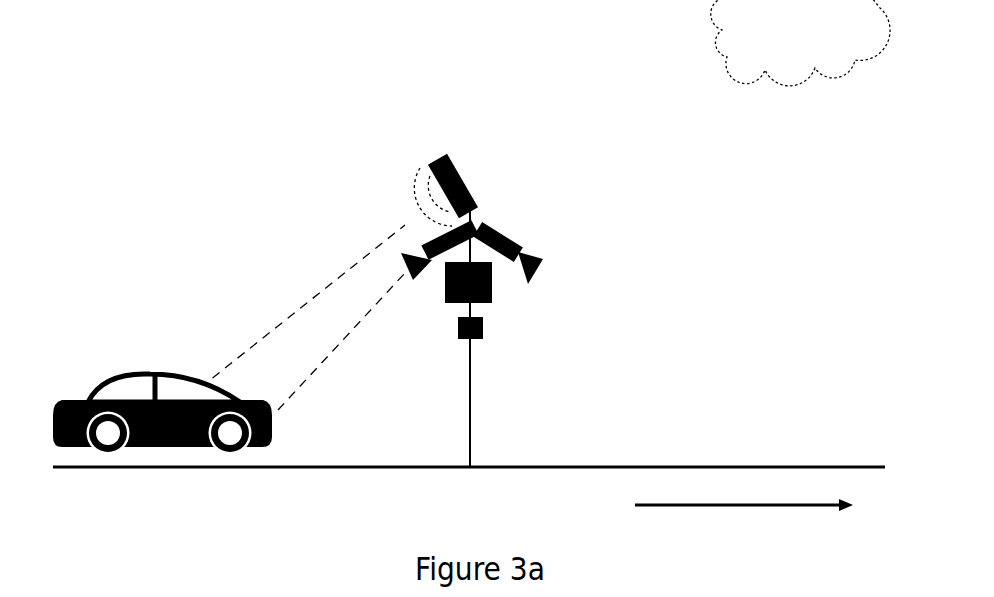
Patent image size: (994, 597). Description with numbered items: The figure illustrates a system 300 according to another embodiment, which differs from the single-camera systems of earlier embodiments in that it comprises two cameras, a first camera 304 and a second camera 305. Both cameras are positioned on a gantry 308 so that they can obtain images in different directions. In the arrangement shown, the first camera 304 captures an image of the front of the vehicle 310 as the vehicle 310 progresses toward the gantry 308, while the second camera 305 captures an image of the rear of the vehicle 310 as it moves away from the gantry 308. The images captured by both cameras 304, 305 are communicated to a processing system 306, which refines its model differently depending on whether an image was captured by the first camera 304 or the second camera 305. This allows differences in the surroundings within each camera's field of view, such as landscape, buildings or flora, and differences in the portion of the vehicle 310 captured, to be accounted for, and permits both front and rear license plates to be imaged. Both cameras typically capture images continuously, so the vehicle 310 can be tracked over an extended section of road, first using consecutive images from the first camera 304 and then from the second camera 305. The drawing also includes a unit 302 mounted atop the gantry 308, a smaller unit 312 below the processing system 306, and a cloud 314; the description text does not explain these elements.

The system 300 is at (292, 99).
The first sensor (lidar/radar unit) 302 is at (457, 173).
The first camera 304 is at (423, 245).
The second camera 305 is at (520, 247).
The processing system 306 is at (490, 300).
The gantry 308 is at (470, 358).
The vehicle 310 is at (177, 443).
The communication / control module 312 is at (458, 337).
The cloud network / remote server 314 is at (800, 43).